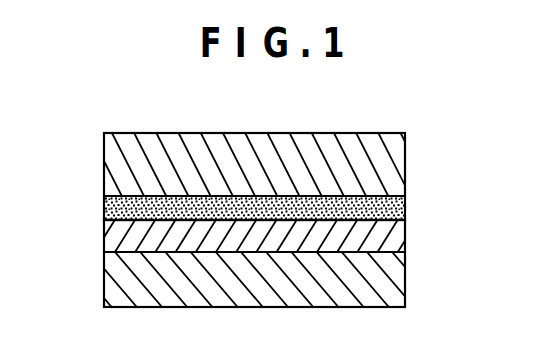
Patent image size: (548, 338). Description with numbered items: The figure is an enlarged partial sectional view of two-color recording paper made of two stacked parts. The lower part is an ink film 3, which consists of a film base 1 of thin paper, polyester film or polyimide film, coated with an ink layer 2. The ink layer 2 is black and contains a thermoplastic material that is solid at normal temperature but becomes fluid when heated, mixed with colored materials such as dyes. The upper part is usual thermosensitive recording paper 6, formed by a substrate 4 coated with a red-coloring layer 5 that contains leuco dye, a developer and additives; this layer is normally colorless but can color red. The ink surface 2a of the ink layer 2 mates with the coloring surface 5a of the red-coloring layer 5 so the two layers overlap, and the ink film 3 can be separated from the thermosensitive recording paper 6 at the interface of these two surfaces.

The film base 1 is at (398, 281).
The ink layer 2 is at (400, 239).
The ink surface 2a is at (117, 220).
The ink film 3 is at (473, 216).
The substrate 4 is at (396, 168).
The red-coloring layer 5 is at (399, 207).
The coloring surface 5a is at (136, 219).
The thermosensitive recording paper 6 is at (473, 130).